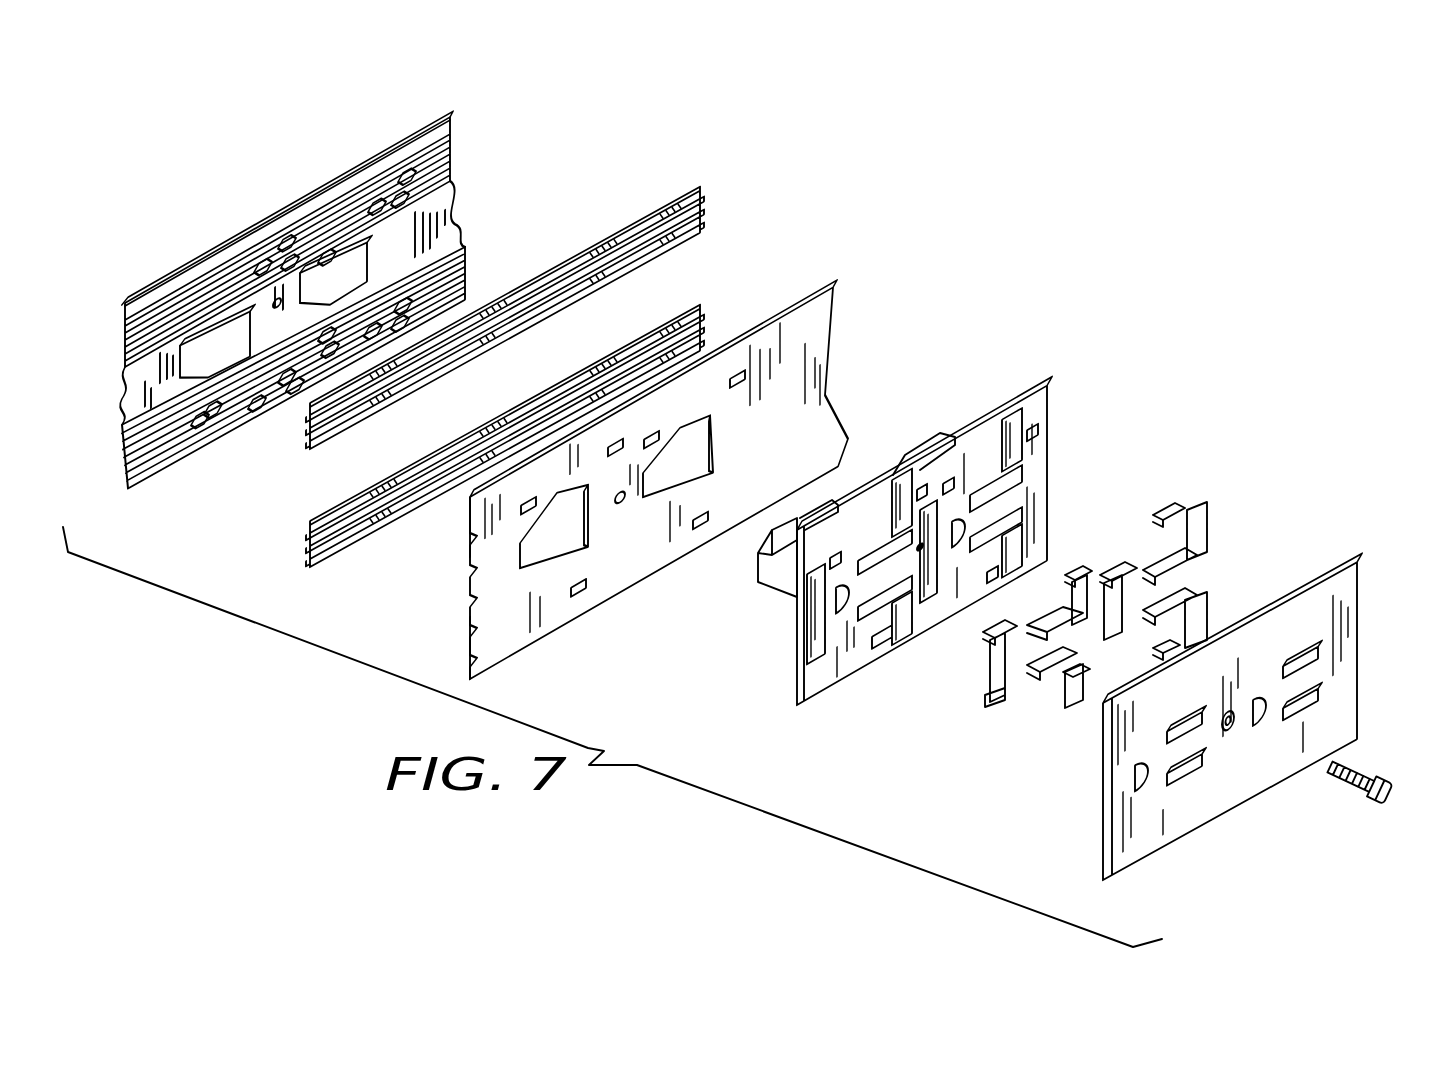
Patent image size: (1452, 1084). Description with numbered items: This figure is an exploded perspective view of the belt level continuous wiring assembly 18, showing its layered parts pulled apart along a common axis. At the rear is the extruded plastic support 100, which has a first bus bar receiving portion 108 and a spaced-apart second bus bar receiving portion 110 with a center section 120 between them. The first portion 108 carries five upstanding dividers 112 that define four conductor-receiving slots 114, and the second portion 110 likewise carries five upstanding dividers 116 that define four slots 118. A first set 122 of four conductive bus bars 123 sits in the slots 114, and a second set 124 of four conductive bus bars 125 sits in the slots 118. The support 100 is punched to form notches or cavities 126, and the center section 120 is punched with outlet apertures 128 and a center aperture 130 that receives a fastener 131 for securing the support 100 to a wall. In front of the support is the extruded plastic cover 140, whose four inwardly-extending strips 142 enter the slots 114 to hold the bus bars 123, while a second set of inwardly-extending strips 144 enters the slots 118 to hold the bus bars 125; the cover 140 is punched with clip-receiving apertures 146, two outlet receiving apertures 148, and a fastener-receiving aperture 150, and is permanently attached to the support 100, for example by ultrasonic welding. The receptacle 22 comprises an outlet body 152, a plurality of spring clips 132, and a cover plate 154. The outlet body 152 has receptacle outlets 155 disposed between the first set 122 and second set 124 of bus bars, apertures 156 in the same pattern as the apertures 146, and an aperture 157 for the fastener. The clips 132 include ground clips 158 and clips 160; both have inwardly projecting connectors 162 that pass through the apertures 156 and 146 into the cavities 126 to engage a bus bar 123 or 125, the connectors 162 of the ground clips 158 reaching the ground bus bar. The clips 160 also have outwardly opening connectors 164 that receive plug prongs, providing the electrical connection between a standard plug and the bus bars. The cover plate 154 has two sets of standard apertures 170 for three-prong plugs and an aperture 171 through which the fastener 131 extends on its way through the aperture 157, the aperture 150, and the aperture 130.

The belt level continuous wiring assembly 18 is at (1030, 223).
The receptacle 22 is at (968, 717).
The support 100 is at (480, 160).
The first bus bar receiving portion 108 is at (110, 337).
The second bus bar receiving portion 110 is at (112, 462).
The upstanding dividers 112 is at (470, 135).
The bus bar conductor-receiving slots 114 is at (468, 152).
The upstanding dividers 116 is at (447, 237).
The bus bar conductor-receiving slots 118 is at (468, 293).
The center section 120 is at (143, 387).
The first set of conductive bus bars 122 is at (707, 220).
The conductive bus bars 123 is at (693, 193).
The second set of conductive bus bars 124 is at (710, 320).
The conductive bus bars 125 is at (673, 313).
The notches or cavities 126 is at (407, 167).
The outlet apertures 128 is at (346, 272).
The center aperture 130 is at (277, 300).
The fastener 131 is at (1360, 780).
The spring clips 132 is at (1238, 520).
The cover 140 is at (820, 338).
The inwardly-extending strips 142 is at (472, 510).
The second set of inwardly-extending strips 144 is at (467, 649).
The clip-receiving apertures 146 is at (740, 380).
The outlet receiving apertures 148 is at (683, 465).
The fastener-receiving aperture 150 is at (620, 500).
The outlet body 152 is at (1060, 428).
The cover plate 154 is at (1340, 617).
The receptacle outlets 155 is at (933, 440).
The apertures 156 is at (953, 483).
The aperture 157 is at (920, 548).
The ground clips 158 is at (997, 693).
The clips 160 is at (1073, 693).
The inwardly projecting connectors 162 is at (997, 633).
The outwardly opening connectors 164 is at (1060, 683).
The standard apertures 170 is at (1278, 705).
The aperture 171 is at (1228, 713).